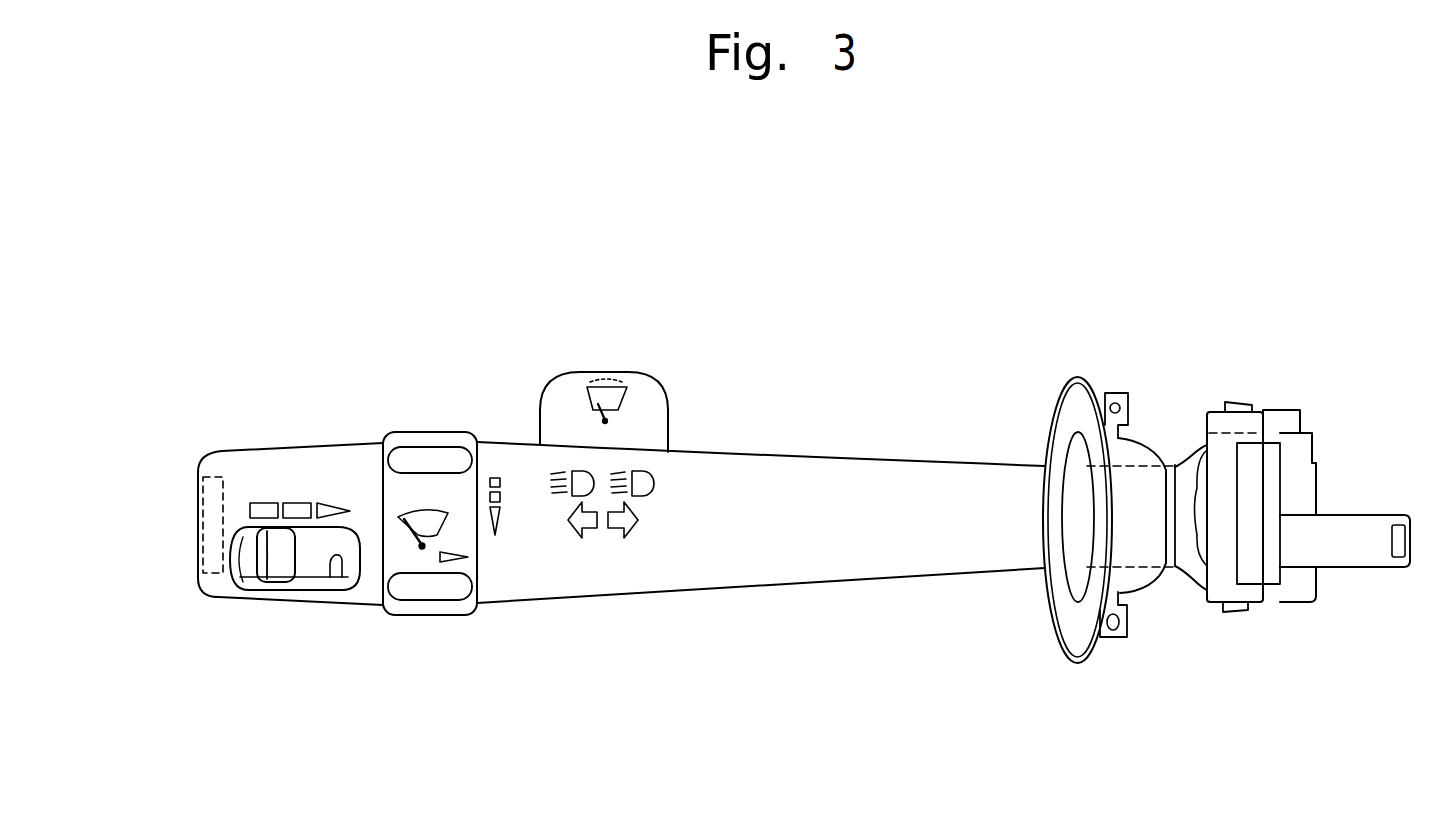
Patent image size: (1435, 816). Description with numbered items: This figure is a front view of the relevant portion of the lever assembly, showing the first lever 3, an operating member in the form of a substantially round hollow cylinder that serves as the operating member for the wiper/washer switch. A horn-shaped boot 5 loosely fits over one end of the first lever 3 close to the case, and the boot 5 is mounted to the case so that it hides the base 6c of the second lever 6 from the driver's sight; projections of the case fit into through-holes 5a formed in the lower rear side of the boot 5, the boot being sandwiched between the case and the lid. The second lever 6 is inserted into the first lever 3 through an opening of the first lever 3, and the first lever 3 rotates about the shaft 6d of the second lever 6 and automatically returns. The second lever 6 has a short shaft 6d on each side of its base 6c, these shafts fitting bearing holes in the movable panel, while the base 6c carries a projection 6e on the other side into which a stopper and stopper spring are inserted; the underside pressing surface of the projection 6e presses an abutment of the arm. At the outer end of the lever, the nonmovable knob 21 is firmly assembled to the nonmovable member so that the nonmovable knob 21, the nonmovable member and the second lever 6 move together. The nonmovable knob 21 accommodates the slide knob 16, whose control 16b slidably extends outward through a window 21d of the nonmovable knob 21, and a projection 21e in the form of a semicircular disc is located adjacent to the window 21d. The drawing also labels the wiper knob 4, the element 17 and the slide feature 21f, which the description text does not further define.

The first lever 3 is at (800, 460).
The wiper switch knob 4 is at (430, 432).
The boot 5 is at (1072, 372).
The through-holes 5a is at (1115, 392).
The second lever 6 is at (1213, 400).
The base 6c is at (1283, 409).
The shaft 6d is at (1242, 401).
The projection 6e is at (1355, 528).
The slide knob 16 is at (258, 565).
The control 16b is at (277, 580).
The switch element 17 is at (200, 506).
The nonmovable knob 21 is at (313, 446).
The window 21d is at (332, 578).
The projection 21e is at (308, 593).
The slide slot 21f is at (240, 555).